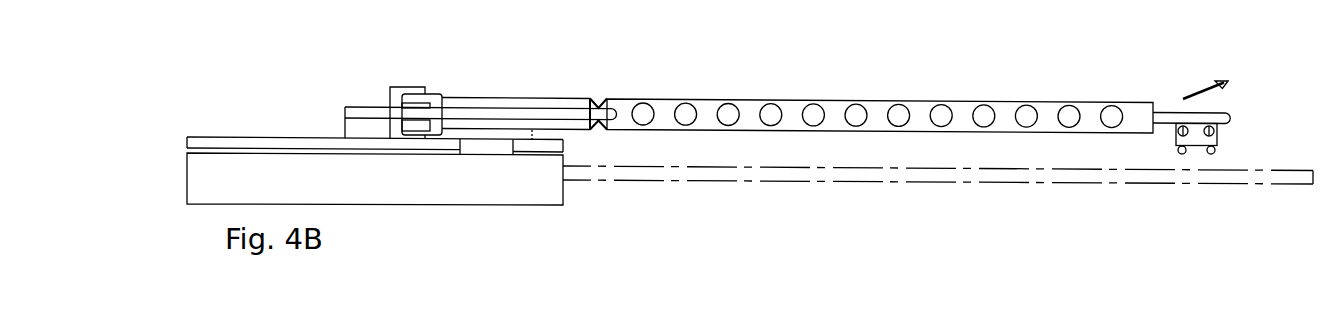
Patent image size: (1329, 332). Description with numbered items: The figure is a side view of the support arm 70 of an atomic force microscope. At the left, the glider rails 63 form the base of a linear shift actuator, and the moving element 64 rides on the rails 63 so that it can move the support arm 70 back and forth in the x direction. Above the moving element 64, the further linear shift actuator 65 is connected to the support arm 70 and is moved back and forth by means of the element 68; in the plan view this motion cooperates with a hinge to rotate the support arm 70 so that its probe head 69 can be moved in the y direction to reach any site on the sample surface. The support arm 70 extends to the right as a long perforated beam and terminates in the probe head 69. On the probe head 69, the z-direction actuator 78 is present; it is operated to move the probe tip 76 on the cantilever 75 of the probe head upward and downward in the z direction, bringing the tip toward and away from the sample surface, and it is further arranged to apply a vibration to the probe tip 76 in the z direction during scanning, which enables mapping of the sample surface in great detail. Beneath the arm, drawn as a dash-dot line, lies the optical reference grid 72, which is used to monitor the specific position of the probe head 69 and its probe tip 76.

The glider rails 63 is at (187, 178).
The moving element 64 is at (240, 137).
The further linear shift actuator 65 is at (365, 107).
The element 68 is at (413, 87).
The probe head 69 is at (1231, 118).
The support arm 70 is at (835, 100).
The optical reference grid 72 is at (1085, 185).
The cantilever 75 is at (1196, 90).
The probe tip 76 is at (1228, 80).
The z-direction actuator 78 is at (1196, 137).